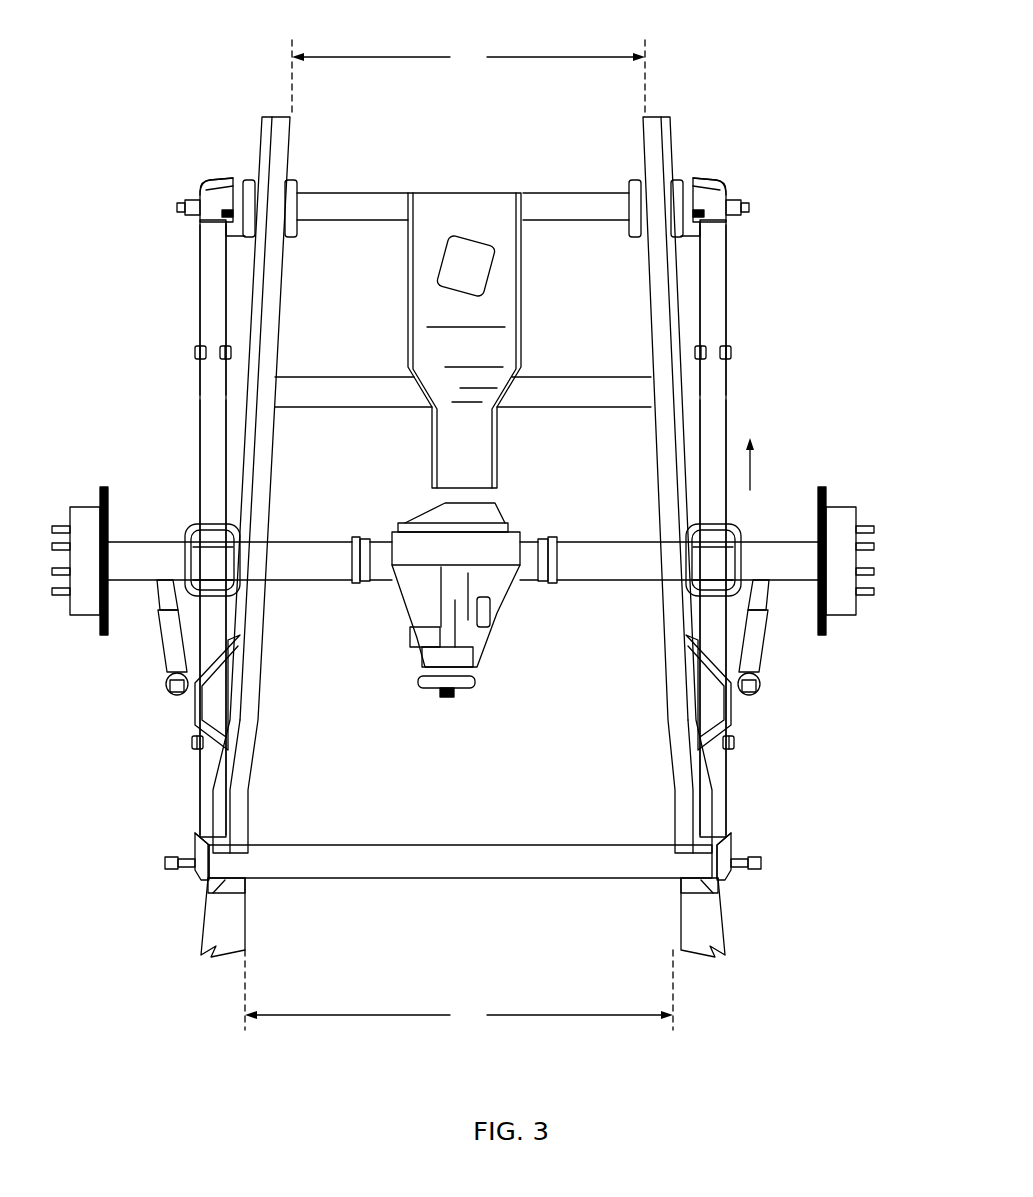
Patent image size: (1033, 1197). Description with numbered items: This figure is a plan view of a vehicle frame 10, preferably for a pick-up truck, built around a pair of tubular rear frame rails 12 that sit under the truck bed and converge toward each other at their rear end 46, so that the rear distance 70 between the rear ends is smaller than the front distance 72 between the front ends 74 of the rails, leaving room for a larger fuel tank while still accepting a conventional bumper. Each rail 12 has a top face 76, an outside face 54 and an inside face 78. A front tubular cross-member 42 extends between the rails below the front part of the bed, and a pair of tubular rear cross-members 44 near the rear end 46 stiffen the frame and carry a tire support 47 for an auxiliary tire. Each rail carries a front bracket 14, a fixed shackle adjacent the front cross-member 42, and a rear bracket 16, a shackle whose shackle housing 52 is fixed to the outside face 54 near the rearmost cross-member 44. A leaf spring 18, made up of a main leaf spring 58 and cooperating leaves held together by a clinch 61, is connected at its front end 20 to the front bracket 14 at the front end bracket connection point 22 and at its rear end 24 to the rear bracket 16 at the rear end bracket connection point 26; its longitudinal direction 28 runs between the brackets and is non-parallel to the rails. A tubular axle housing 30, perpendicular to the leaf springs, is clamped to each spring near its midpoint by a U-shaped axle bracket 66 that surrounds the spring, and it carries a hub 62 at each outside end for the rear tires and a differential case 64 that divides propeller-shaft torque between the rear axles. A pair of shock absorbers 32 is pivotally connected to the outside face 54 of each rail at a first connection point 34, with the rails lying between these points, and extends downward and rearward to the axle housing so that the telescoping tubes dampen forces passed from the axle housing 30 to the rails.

The vehicle frame 10 is at (703, 44).
The rear frame rails 12 is at (278, 112).
The front bracket 14 is at (197, 845).
The rear bracket 16 is at (218, 180).
The leaf springs 18 is at (195, 446).
The front end 20 is at (193, 830).
The front end bracket connection point 22 is at (175, 867).
The rear end 24 is at (198, 226).
The rear end bracket connection point 26 is at (192, 205).
The longitudinal direction 28 is at (752, 478).
The axle housing 30 is at (308, 538).
The shock absorbers 32 is at (158, 655).
The first connection point 34 is at (186, 695).
The front tubular cross-member 42 is at (400, 845).
The rear cross-members 44 is at (338, 193).
The rear end 46 is at (296, 128).
The tire support 47 is at (465, 193).
The shackle housing 52 is at (210, 185).
The outside face 54 is at (255, 282).
The main leaf spring 58 is at (205, 395).
The clinch 61 is at (193, 352).
The hub 62 is at (87, 505).
The differential case 64 is at (505, 625).
The axle bracket 66 is at (210, 550).
The rear distance 70 is at (468, 77).
The front distance 72 is at (459, 990).
The front ends 74 is at (220, 900).
The top face 76 is at (275, 298).
The inside face 78 is at (275, 458).